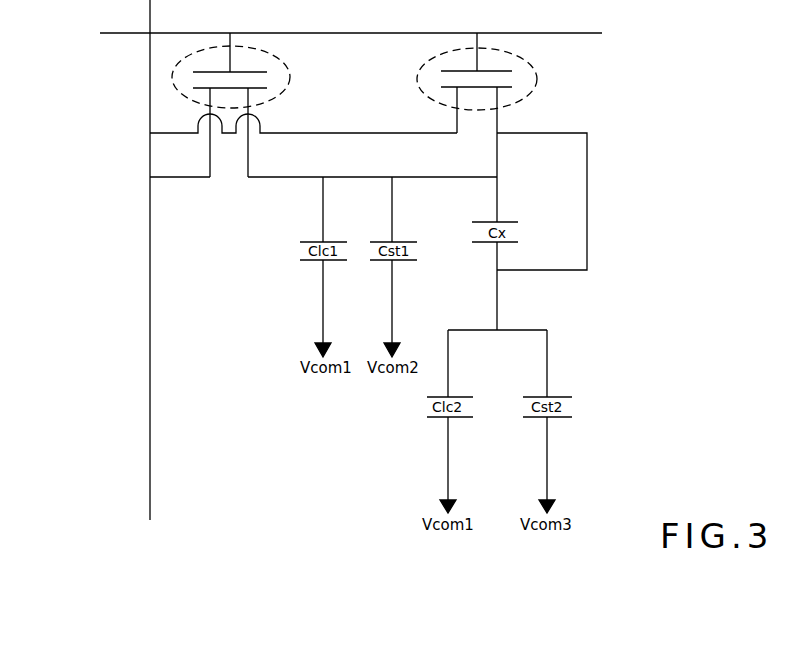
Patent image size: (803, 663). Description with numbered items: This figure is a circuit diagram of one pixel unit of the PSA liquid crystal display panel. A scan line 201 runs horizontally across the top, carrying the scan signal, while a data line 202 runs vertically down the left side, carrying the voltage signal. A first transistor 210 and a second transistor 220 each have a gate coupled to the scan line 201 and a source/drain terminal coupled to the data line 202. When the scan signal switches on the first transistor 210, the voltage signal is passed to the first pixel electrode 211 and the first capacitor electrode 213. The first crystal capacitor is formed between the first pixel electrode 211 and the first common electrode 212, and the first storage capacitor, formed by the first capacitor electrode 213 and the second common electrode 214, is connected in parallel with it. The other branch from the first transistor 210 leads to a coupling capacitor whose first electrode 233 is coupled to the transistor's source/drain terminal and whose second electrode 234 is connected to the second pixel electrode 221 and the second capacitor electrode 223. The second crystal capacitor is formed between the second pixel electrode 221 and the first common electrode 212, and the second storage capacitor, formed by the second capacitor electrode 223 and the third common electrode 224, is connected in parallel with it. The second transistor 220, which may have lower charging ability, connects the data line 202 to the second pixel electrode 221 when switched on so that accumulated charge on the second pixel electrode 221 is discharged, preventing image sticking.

The scan line 201 is at (140, 32).
The data line 202 is at (150, 466).
The first transistor 210 is at (286, 63).
The second transistor 220 is at (532, 66).
The first pixel electrode 211 is at (305, 241).
The first common electrode 212 is at (305, 262).
The first capacitor electrode 213 is at (374, 241).
The second common electrode 214 is at (376, 262).
The second pixel electrode 221 is at (462, 396).
The second capacitor electrode 223 is at (562, 396).
The third common electrode 224 is at (565, 418).
The first electrode 233 is at (480, 221).
The second electrode 234 is at (480, 243).